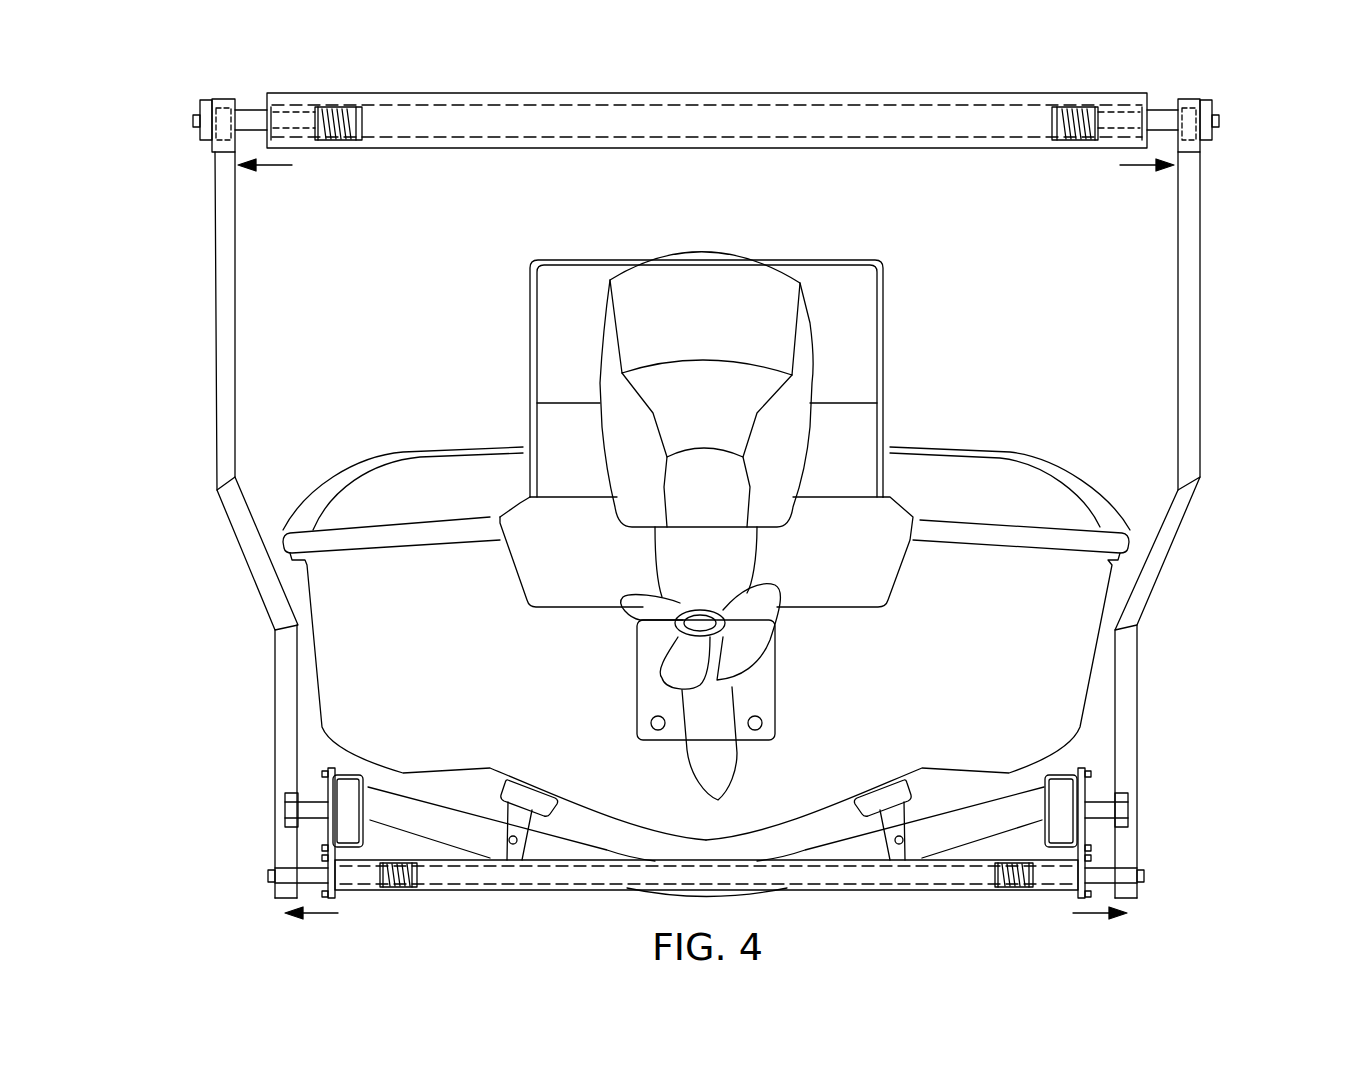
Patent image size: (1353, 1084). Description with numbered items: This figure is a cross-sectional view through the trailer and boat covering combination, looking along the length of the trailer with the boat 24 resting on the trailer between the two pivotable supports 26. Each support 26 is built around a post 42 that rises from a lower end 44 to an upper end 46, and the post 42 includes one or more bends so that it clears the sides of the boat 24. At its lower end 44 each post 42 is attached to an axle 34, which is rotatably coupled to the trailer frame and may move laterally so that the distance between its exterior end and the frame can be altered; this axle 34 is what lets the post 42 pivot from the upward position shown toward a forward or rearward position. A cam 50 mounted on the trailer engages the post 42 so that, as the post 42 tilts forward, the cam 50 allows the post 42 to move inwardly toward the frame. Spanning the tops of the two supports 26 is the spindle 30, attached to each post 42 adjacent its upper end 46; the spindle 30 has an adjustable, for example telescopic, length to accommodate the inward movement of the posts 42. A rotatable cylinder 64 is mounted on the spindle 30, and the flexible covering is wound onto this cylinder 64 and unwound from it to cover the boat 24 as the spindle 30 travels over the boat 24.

The boat 24 is at (365, 660).
The supports 26 is at (200, 338).
The spindle 30 is at (1163, 110).
The axle 34 is at (312, 877).
The post 42 is at (237, 537).
The lower end 44 is at (268, 912).
The upper end 46 is at (196, 168).
The cam 50 is at (1095, 808).
The cylinder 64 is at (1025, 93).